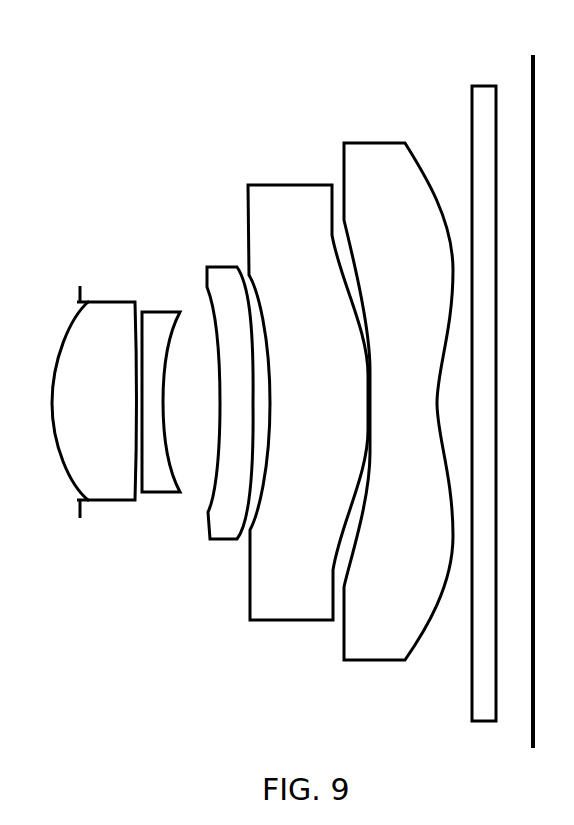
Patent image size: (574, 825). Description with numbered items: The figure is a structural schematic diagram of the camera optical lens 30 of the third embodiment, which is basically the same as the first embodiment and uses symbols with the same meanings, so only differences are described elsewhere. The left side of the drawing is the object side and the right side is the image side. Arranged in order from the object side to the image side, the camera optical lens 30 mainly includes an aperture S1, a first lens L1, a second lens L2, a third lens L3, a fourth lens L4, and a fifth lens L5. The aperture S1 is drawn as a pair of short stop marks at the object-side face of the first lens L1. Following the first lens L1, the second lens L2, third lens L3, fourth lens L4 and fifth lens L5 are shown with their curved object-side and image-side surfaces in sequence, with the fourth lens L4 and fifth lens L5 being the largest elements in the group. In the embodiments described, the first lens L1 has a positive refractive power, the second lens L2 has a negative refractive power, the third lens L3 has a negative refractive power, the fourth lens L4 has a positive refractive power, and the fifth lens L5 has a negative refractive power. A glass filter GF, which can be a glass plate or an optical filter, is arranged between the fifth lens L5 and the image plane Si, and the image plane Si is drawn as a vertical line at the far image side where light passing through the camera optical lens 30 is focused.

The camera optical lens 30 is at (313, 55).
The aperture S1 is at (74, 286).
The first lens L1 is at (94, 387).
The second lens L2 is at (161, 389).
The third lens L3 is at (230, 389).
The fourth lens L4 is at (308, 388).
The fifth lens L5 is at (398, 387).
The glass filter GF is at (480, 389).
The image plane Si is at (531, 388).